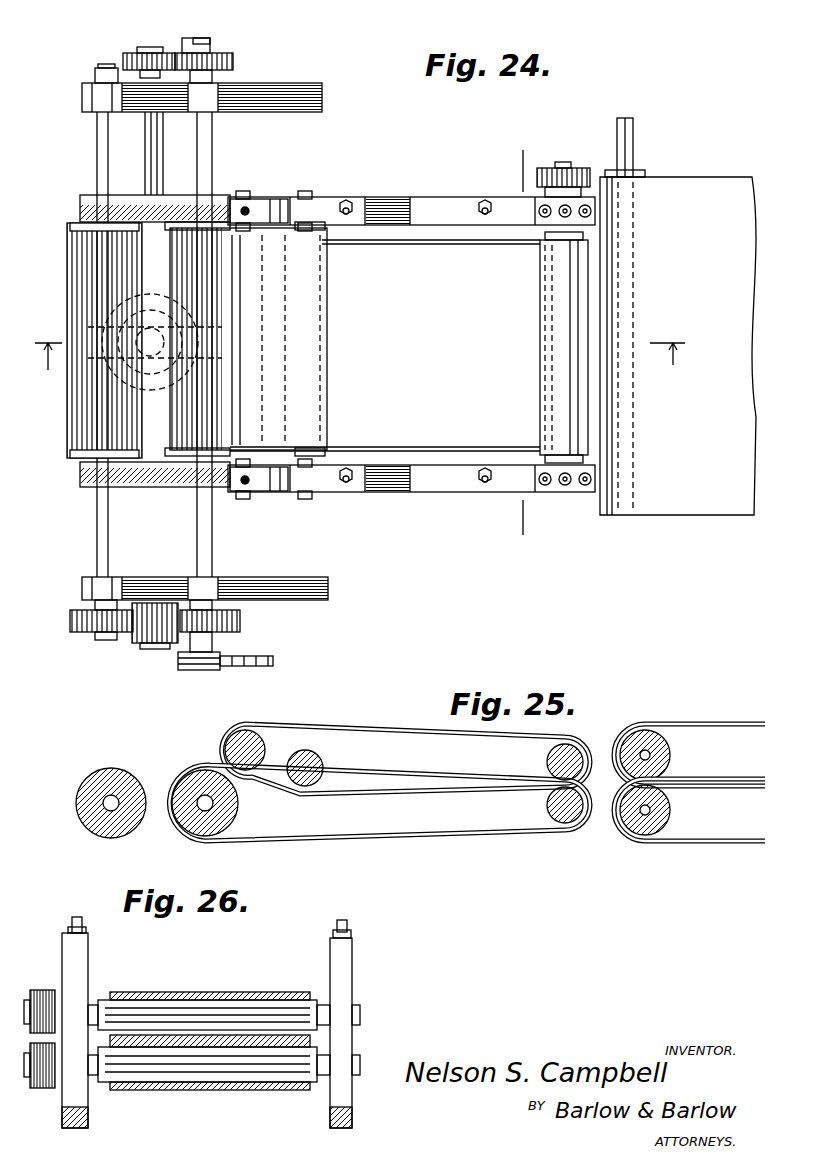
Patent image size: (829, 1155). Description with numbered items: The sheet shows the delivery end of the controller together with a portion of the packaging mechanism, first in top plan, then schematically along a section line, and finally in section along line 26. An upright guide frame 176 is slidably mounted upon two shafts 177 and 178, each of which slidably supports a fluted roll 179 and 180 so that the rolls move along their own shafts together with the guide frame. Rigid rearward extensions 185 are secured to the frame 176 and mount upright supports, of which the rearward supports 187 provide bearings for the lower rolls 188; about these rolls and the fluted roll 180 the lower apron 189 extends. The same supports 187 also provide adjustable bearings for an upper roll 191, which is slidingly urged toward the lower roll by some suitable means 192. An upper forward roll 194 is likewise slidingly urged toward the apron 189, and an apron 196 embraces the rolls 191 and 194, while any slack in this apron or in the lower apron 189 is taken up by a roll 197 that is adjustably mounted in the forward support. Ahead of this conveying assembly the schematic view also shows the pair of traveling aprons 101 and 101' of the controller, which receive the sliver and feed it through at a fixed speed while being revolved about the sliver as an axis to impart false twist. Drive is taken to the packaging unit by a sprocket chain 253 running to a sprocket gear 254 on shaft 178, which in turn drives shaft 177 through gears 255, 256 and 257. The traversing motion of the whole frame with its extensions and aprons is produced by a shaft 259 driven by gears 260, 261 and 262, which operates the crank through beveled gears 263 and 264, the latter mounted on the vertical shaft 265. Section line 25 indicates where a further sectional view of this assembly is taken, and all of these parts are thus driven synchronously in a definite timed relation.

In FIG. 24, the section line 25- 25 is at (360, 350).
In FIG. 24, the section line 26- 26 is at (514, 165).
In FIG. 25, the traveling apron 101 is at (689, 744).
In FIG. 25, the traveling apron 101' is at (689, 826).
In FIG. 24, the upright guide frame 176 is at (82, 474).
In FIG. 24, the shaft 177 is at (110, 547).
In FIG. 24, the shaft 178 is at (213, 544).
In FIG. 24, the fluted roll 179 is at (68, 446).
In FIG. 25, the fluted roll 179 is at (78, 795).
In FIG. 24, the fluted roll 180 is at (180, 465).
In FIG. 25, the fluted roll 180 is at (238, 812).
In FIG. 24, the rearward extension 185 is at (218, 347).
In FIG. 26, the rearward upright support 187 is at (82, 975).
In FIG. 25, the lower roll 188 is at (565, 825).
In FIG. 26, the lower roll 188 is at (163, 1070).
In FIG. 24, the lower apron 189 is at (222, 470).
In FIG. 25, the lower apron 189 is at (440, 838).
In FIG. 26, the lower apron 189 is at (243, 1087).
In FIG. 25, the upper roll 191 is at (578, 748).
In FIG. 26, the upper roll 191 is at (175, 1007).
In FIG. 26, the urging means 192 is at (348, 932).
In FIG. 24, the upper forward roll 194 is at (258, 215).
In FIG. 25, the upper forward roll 194 is at (265, 740).
In FIG. 24, the upper apron 196 is at (412, 437).
In FIG. 25, the upper apron 196 is at (398, 719).
In FIG. 26, the upper apron 196 is at (243, 995).
In FIG. 24, the take-up roll 197 is at (325, 453).
In FIG. 25, the take-up roll 197 is at (325, 770).
In FIG. 24, the sprocket chain 253 is at (262, 667).
In FIG. 24, the sprocket gear 254 is at (188, 668).
In FIG. 24, the gear 255 is at (242, 621).
In FIG. 24, the gear 256 is at (146, 645).
In FIG. 24, the gear 257 is at (70, 632).
In FIG. 24, the shaft 259 is at (163, 150).
In FIG. 24, the gear 260 is at (233, 60).
In FIG. 24, the gear 261 is at (168, 50).
In FIG. 24, the gear 262 is at (125, 57).
In FIG. 24, the beveled gear 263 is at (135, 292).
In FIG. 24, the beveled gear 264 is at (135, 328).
In FIG. 24, the vertical shaft 265 is at (135, 360).